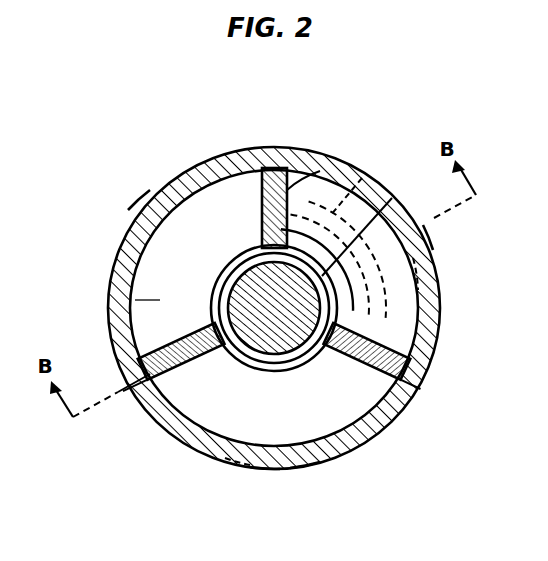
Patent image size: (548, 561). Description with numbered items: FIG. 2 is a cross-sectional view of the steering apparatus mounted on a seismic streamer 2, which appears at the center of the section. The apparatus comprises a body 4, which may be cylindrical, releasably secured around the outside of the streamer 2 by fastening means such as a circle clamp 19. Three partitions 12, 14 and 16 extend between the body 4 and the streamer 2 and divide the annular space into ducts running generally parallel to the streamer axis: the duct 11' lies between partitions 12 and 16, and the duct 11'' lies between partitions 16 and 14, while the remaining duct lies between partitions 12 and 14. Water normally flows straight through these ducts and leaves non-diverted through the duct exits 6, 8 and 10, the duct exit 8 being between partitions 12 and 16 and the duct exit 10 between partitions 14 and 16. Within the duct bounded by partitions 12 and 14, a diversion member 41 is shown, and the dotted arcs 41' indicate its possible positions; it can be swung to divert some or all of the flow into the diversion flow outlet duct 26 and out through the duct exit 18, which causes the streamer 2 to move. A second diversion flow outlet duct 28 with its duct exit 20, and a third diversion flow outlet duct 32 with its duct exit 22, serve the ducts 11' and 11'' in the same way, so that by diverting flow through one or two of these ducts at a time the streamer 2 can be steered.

The streamer 2 is at (186, 297).
The body 4 is at (274, 278).
The duct exit 6 is at (403, 269).
The duct exit 8 is at (99, 315).
The duct exit 10 is at (263, 477).
The duct 11' is at (206, 229).
The duct 11'' is at (233, 392).
The partition 12 is at (296, 168).
The partition 14 is at (391, 386).
The partition 16 is at (158, 391).
The duct exit 18 is at (467, 240).
The circle clamp 19 is at (180, 308).
The duct exit 20 is at (234, 308).
The duct exit 22 is at (312, 496).
The diversion flow outlet duct 26 is at (465, 274).
The diversion flow outlet duct 28 is at (127, 174).
The diversion flow outlet duct 32 is at (201, 481).
The diversion member 41 is at (349, 215).
The dotted arcs 41' is at (342, 205).